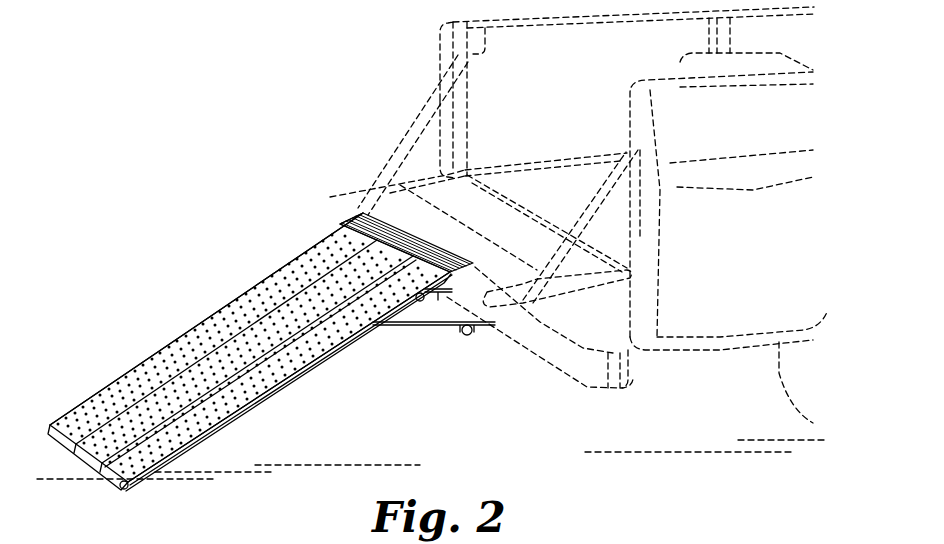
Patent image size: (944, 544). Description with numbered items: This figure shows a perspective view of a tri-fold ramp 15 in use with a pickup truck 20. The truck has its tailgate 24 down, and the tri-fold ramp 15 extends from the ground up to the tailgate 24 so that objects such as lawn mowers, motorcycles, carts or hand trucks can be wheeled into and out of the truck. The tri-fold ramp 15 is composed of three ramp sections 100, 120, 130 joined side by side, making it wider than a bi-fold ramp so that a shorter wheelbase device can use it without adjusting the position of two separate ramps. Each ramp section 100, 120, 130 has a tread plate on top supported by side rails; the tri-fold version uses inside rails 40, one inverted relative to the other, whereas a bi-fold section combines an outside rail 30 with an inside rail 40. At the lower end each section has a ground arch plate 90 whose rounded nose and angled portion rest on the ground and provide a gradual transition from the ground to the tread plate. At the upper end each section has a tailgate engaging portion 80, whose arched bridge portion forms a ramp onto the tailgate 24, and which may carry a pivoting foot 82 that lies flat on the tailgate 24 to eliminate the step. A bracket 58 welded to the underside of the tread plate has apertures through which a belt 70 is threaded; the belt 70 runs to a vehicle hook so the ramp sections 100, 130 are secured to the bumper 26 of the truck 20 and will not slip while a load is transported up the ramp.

The tri-fold ramp 15 is at (267, 328).
The pickup truck 20 is at (576, 204).
The tailgate 24 is at (506, 249).
The bumper 26 is at (573, 367).
The outside rail 30 is at (203, 322).
The inside rail 40 is at (357, 290).
The bracket 58 is at (288, 287).
The belt 70 is at (438, 293).
The tailgate engaging portion 80 is at (368, 215).
The pivoting foot 82 is at (392, 216).
The ground arch plate 90 is at (113, 487).
The ramp section 100 is at (112, 400).
The ramp section 120 is at (152, 408).
The ramp section 130 is at (198, 412).